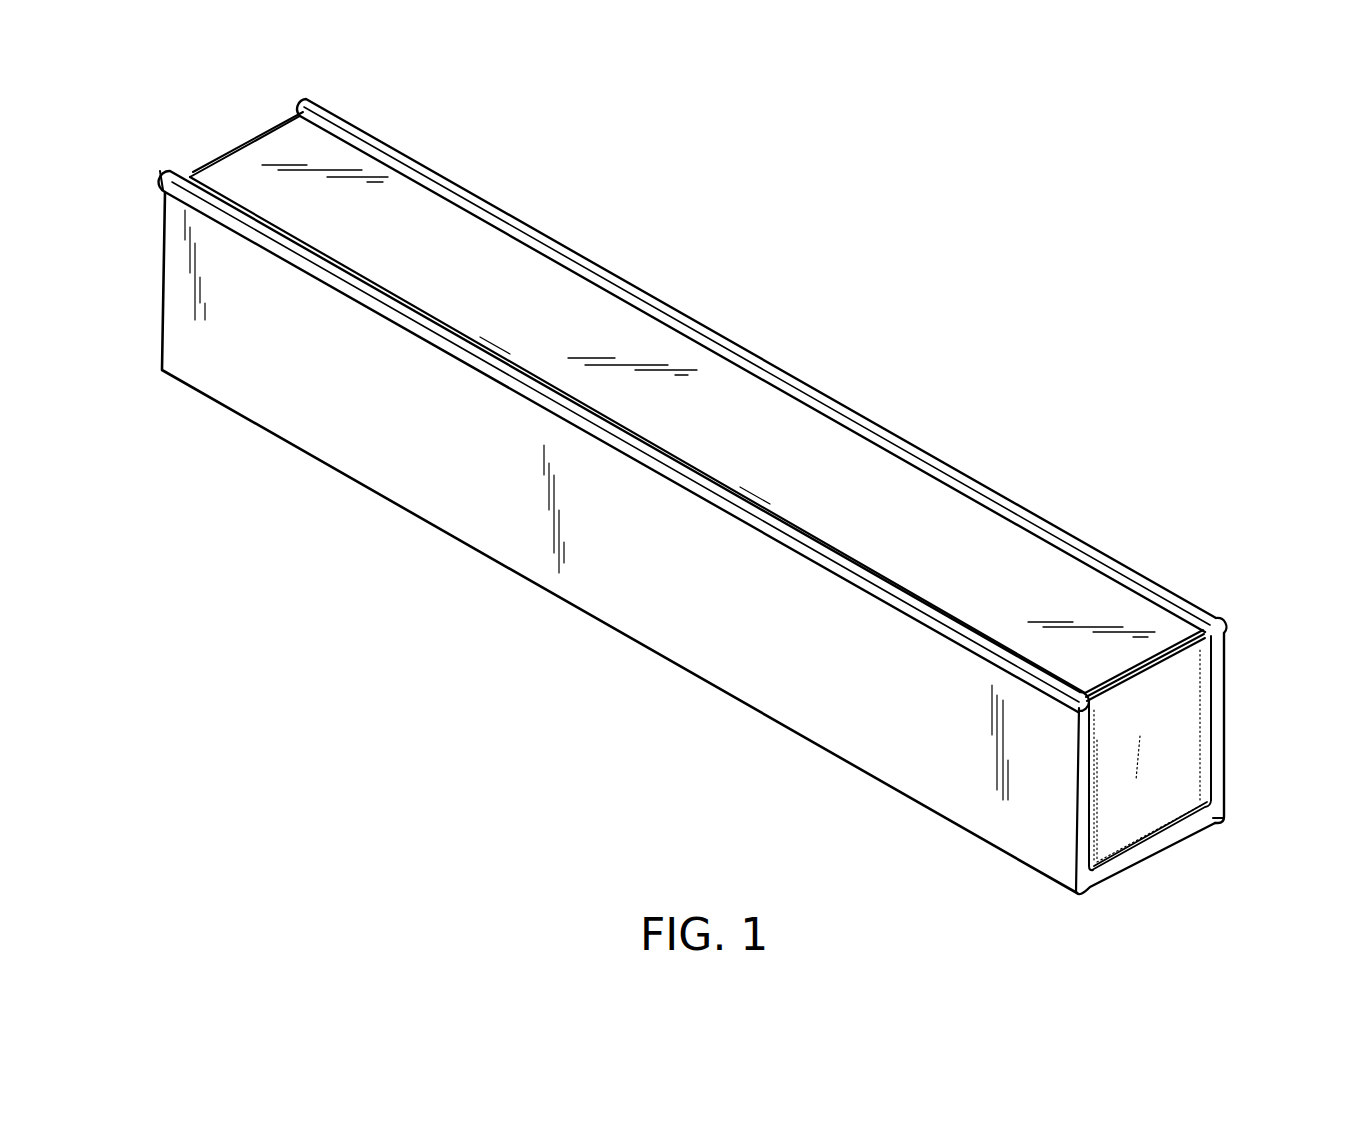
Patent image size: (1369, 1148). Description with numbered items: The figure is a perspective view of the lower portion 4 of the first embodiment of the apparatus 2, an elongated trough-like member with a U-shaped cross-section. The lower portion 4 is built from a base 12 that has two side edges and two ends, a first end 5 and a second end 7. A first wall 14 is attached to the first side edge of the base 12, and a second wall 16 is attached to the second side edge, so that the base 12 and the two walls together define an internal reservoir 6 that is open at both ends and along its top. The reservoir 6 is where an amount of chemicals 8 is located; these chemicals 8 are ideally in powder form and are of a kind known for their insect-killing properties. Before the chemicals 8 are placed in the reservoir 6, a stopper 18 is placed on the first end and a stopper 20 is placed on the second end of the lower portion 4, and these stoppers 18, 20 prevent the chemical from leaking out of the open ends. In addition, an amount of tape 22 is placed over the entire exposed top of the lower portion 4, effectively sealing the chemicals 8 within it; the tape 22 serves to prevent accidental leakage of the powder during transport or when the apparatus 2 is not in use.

The apparatus 2 is at (696, 505).
The lower portion 4 is at (1180, 593).
The first end 5 is at (1223, 782).
The internal reservoir 6 is at (1183, 778).
The second end 7 is at (63, 235).
The chemicals 8 is at (1182, 700).
The base 12 is at (1127, 867).
The first wall 14 is at (910, 762).
The second wall 16 is at (1227, 665).
The stopper 18 is at (1160, 810).
The stopper 20 is at (235, 147).
The tape 22 is at (888, 485).